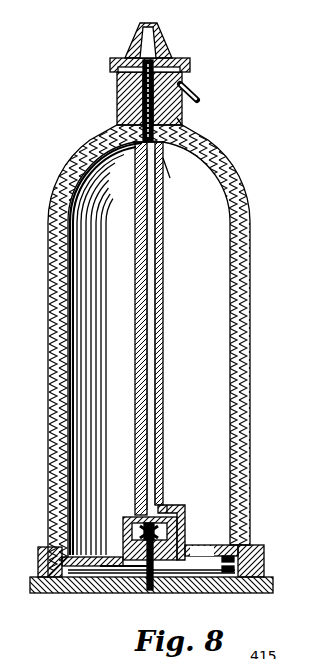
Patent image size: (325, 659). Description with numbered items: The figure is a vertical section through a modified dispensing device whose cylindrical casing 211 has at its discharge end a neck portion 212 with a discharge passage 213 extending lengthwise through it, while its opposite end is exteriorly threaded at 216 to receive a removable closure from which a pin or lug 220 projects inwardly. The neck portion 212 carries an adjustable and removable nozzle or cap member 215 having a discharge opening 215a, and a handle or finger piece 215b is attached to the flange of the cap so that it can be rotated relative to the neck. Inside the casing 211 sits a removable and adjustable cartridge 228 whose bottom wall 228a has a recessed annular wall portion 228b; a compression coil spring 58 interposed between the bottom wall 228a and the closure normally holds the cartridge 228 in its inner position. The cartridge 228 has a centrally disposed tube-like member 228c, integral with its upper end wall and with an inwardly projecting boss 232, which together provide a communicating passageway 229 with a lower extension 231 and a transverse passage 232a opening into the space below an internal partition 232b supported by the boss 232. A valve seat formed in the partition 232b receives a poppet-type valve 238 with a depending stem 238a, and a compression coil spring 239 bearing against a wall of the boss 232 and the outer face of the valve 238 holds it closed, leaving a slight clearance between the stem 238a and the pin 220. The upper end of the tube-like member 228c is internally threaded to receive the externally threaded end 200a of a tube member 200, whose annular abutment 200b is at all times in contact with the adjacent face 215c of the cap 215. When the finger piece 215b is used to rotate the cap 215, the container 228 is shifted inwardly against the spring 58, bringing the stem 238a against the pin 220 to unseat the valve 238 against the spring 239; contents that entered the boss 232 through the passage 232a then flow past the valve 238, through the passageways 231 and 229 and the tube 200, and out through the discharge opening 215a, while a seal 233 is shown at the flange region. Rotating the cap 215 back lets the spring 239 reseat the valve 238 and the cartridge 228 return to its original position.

The discharge opening 215a is at (142, 38).
The nozzle or cap member 215 is at (165, 45).
The adjacent face of cap 215c is at (190, 63).
The annular projecting portion or abutment 200b is at (118, 70).
The tube member 200 is at (117, 101).
The handle or finger piece 215b is at (197, 96).
The discharge passage 213 is at (182, 102).
The neck portion 212 is at (180, 116).
The externally threaded end 200a is at (184, 174).
The cartridge, capsule or container 228 is at (207, 261).
The tube-like member 228c is at (163, 285).
The communicating passageway 229 is at (148, 320).
The casing 211 is at (250, 347).
The compression coil spring 239 is at (168, 505).
The laterally disposed opening or passage 232a is at (135, 515).
The outer or lower extension 231 is at (185, 515).
The boss 232 is at (122, 539).
The poppet-type valve 238 is at (177, 538).
The bottom or outer wall 228a is at (245, 546).
The casing threads 216 is at (38, 560).
The seal 233 is at (202, 552).
The compression coil spring 58 is at (264, 559).
The internal partition or wall 232b is at (132, 580).
The depending stem 238a is at (128, 583).
The pin or lug 220 is at (160, 587).
The recessed or depressed annular wall portion 228b is at (225, 578).